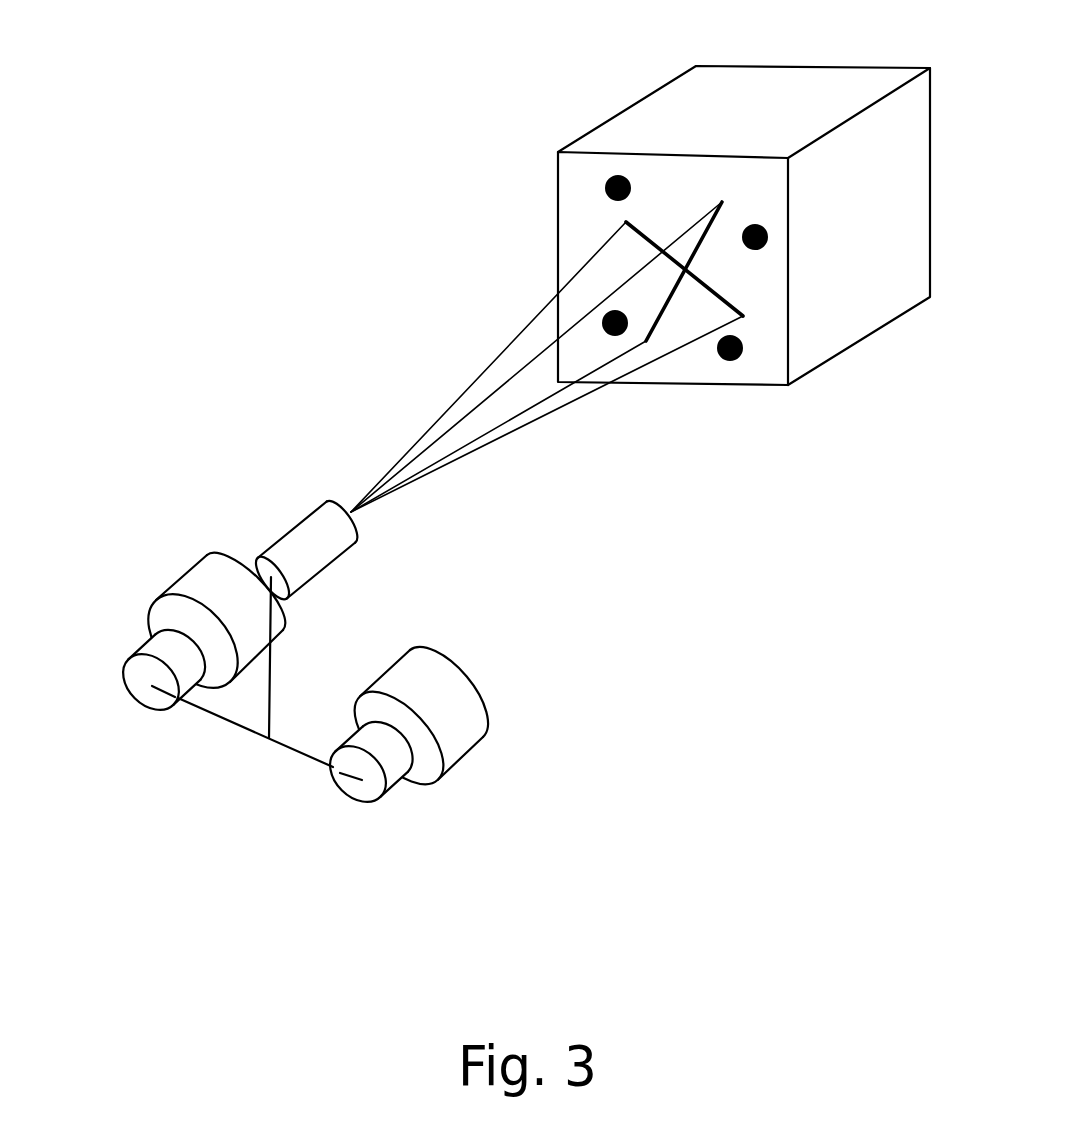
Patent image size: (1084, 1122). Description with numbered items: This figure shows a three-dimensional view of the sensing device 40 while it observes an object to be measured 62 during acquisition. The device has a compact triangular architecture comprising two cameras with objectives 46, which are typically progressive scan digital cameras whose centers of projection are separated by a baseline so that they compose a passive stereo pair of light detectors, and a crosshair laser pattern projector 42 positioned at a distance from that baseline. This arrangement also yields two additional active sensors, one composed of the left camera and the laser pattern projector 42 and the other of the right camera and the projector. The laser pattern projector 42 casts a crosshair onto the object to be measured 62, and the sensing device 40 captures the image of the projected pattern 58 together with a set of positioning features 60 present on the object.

The sensing device 40 is at (295, 611).
The laser pattern projector 42 is at (285, 533).
The objectives and light detectors 46 is at (190, 565).
The projected pattern 58 is at (722, 202).
The positioning features 60 is at (618, 175).
The object to be measured 62 is at (858, 340).